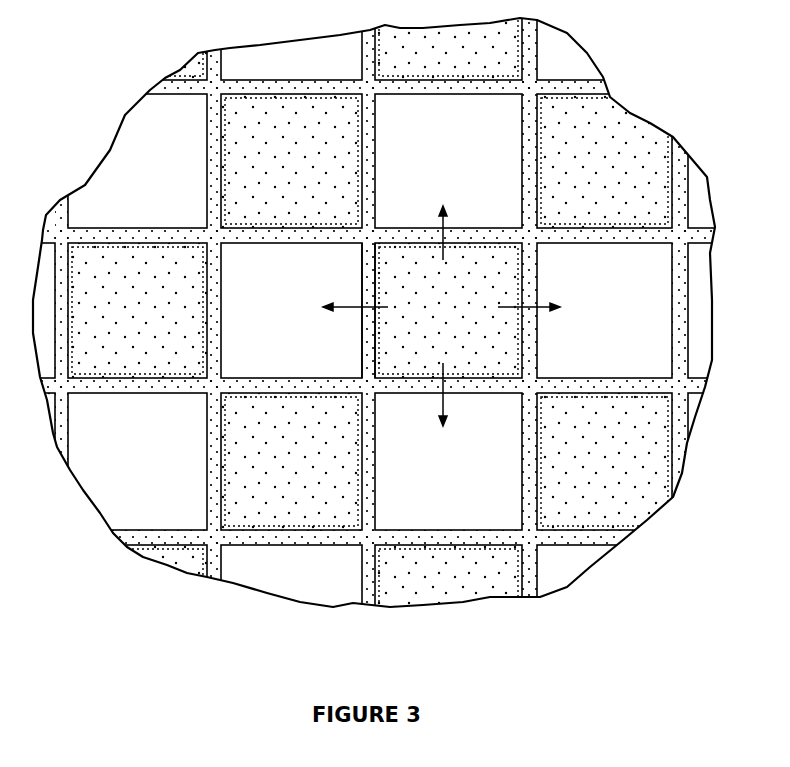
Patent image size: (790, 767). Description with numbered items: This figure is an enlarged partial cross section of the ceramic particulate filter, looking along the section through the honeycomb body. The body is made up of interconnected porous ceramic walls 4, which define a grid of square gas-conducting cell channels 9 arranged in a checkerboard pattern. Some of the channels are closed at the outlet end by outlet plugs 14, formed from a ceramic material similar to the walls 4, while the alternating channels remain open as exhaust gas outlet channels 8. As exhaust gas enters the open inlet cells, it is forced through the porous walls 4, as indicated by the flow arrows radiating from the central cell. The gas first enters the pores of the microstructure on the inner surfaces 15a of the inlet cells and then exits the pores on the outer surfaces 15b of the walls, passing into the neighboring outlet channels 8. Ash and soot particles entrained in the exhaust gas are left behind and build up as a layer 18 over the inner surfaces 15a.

The gas-conducting cell channels 9 is at (150, 78).
The exhaust gas outlet channels 8 is at (152, 177).
The outlet plugs 14 is at (300, 173).
The layer 18 is at (519, 285).
The inner surfaces 15a is at (377, 296).
The outer surfaces 15b is at (358, 297).
The porous ceramic walls 4 is at (377, 323).